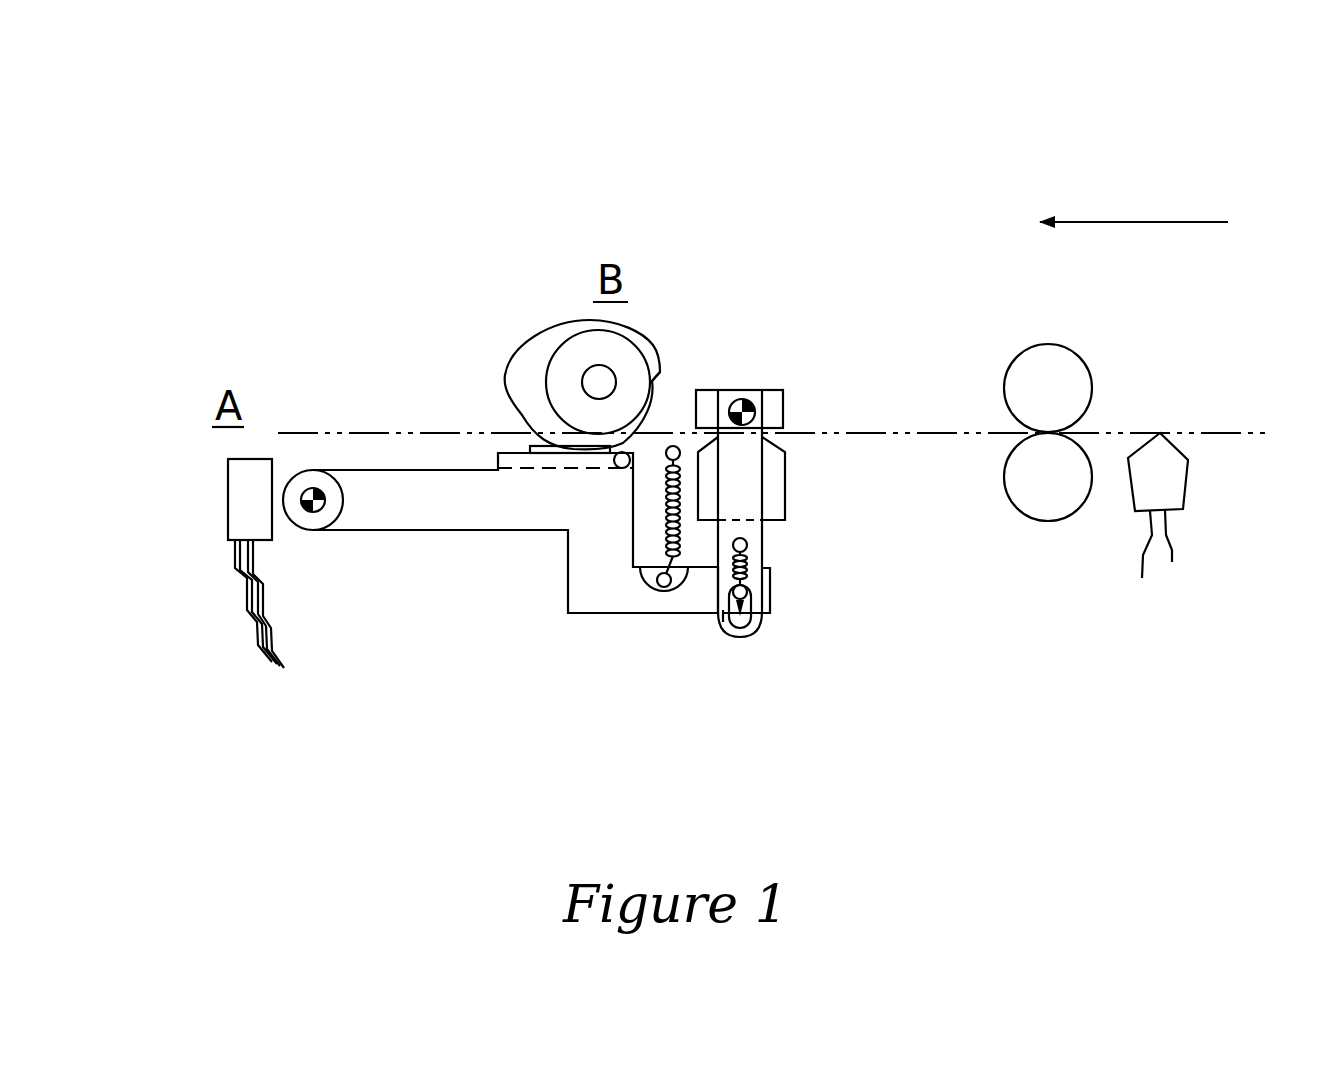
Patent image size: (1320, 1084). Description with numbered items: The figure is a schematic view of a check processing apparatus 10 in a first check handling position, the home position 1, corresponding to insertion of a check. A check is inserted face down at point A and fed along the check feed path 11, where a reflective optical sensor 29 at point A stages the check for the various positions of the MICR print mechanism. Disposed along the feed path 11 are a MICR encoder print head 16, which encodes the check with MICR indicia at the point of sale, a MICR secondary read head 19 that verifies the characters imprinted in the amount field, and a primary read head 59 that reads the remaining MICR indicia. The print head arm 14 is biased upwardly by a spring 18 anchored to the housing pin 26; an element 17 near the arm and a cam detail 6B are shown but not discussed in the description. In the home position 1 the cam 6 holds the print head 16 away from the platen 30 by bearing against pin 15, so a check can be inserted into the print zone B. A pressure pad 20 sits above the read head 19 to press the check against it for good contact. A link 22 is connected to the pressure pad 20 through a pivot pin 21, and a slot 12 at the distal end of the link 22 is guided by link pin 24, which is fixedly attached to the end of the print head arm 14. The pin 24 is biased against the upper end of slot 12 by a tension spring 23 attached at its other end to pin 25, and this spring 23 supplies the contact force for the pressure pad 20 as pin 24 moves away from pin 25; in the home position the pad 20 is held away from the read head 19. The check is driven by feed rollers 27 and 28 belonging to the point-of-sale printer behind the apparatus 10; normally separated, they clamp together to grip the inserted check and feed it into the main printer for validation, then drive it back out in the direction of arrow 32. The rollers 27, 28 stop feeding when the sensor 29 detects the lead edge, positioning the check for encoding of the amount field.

The check processing apparatus 10 is at (298, 228).
The check feed path 11 is at (942, 429).
The platen 30 is at (557, 338).
The home position 1 is at (612, 358).
The cam 6 is at (529, 334).
The cam notch 6B is at (667, 381).
The MICR encoder print head 16 is at (561, 445).
The print head arm 14 is at (400, 535).
The pin 15 is at (618, 472).
The pivot 17 is at (297, 520).
The reflective optical sensor 29 is at (277, 469).
The housing pin 26 is at (662, 460).
The spring 18 is at (646, 535).
The slot 12 is at (737, 633).
The pressure pad 20 is at (789, 418).
The pivot pin 21 is at (764, 405).
The link 22 is at (737, 470).
The MICR secondary read head 19 is at (785, 490).
The pin 25 is at (751, 545).
The tension spring 23 is at (754, 565).
The link pin 24 is at (751, 612).
The feed roller 27 is at (1064, 343).
The feed roller 28 is at (1034, 521).
The primary read head 59 is at (1165, 483).
The arrow 32 is at (1097, 222).